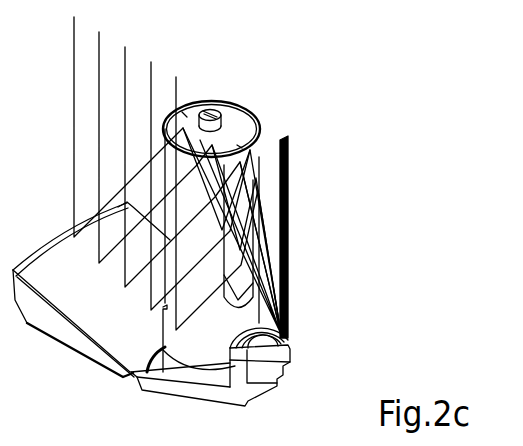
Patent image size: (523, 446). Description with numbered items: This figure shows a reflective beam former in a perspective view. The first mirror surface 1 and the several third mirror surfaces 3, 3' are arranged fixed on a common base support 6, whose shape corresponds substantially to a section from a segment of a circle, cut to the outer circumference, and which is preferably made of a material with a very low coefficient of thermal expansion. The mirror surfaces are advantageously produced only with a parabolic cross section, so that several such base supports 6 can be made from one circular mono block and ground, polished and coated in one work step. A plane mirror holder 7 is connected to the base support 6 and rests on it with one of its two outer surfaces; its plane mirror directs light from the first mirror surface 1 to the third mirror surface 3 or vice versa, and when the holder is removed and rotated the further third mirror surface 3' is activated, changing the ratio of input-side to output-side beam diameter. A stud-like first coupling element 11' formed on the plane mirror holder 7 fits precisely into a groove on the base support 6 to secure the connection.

The first mirror surface 1 is at (53, 255).
The base support 6 is at (47, 325).
The plane mirror holder 7 is at (215, 253).
The first coupling element 11' is at (246, 84).
The further third mirror surface 3' is at (288, 258).
The third mirror surface 3 is at (226, 371).